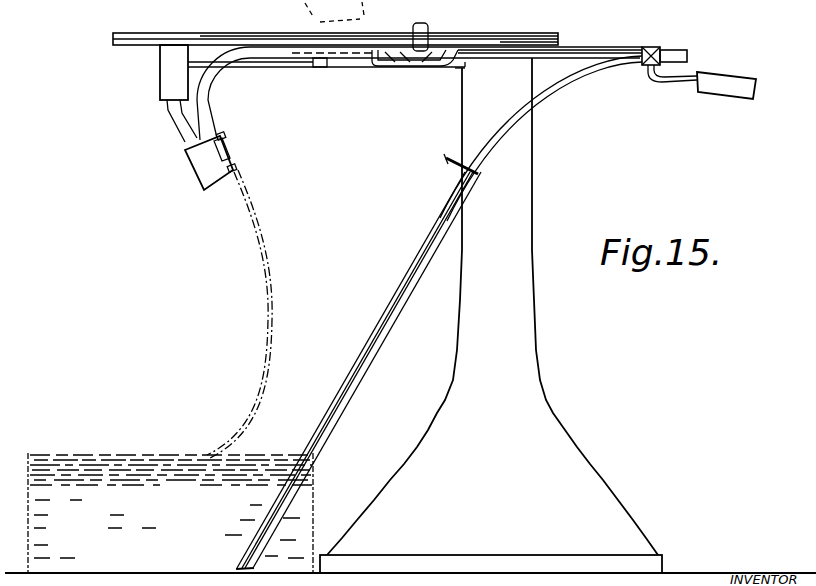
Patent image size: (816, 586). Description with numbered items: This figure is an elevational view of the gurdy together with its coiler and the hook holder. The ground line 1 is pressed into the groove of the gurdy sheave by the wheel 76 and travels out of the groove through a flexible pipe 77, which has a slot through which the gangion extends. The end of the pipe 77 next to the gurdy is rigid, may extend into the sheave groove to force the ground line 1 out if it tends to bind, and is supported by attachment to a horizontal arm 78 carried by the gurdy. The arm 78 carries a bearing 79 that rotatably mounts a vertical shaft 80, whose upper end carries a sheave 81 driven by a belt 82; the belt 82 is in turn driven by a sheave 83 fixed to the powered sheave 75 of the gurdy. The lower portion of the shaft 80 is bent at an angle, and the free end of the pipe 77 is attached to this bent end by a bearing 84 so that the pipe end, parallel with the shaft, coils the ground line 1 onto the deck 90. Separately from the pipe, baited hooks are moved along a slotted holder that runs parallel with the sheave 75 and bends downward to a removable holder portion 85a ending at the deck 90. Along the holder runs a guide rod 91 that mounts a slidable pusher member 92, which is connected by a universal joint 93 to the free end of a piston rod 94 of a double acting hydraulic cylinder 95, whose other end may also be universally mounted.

The ground line 1 is at (269, 308).
The powered sheave 75 is at (598, 50).
The wheel 76 is at (420, 50).
The flexible pipe 77 is at (208, 90).
The horizontal arm 78 is at (286, 67).
The bearing 79 is at (162, 72).
The vertical shaft 80 is at (180, 127).
The sheave 81 is at (134, 33).
The belt 82 is at (277, 38).
The sheave 83 is at (557, 43).
The bearing 84 is at (197, 176).
The removable holder portion 85a is at (408, 274).
The deck 90 is at (689, 573).
The guide rod 91 is at (542, 97).
The slidable pusher member 92 is at (666, 52).
The universal joint 93 is at (651, 47).
The piston rod 94 is at (670, 82).
The double acting hydraulic cylinder 95 is at (728, 80).